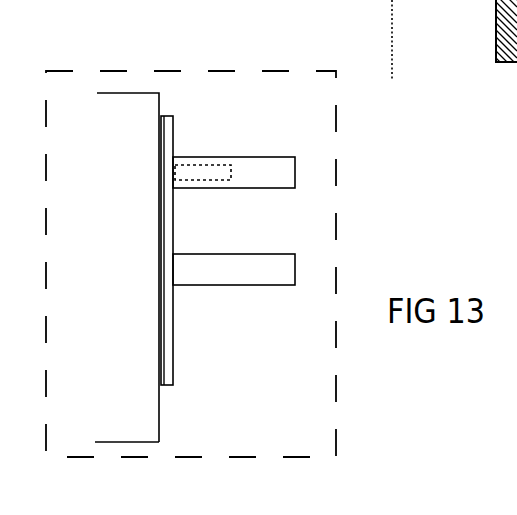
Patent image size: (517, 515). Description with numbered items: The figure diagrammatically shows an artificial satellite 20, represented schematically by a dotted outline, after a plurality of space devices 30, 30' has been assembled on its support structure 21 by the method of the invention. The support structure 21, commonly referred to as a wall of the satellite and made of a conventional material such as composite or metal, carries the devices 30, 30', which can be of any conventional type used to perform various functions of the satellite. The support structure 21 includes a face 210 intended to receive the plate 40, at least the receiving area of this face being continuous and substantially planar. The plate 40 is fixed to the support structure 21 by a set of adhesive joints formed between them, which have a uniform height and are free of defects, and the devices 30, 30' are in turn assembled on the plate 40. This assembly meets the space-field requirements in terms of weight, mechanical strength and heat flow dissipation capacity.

The artificial satellite 20 is at (336, 169).
The support structure 21 is at (135, 93).
The face 210 is at (160, 421).
The plate 40 is at (166, 128).
The space device 30' is at (239, 149).
The space device 30 is at (236, 306).